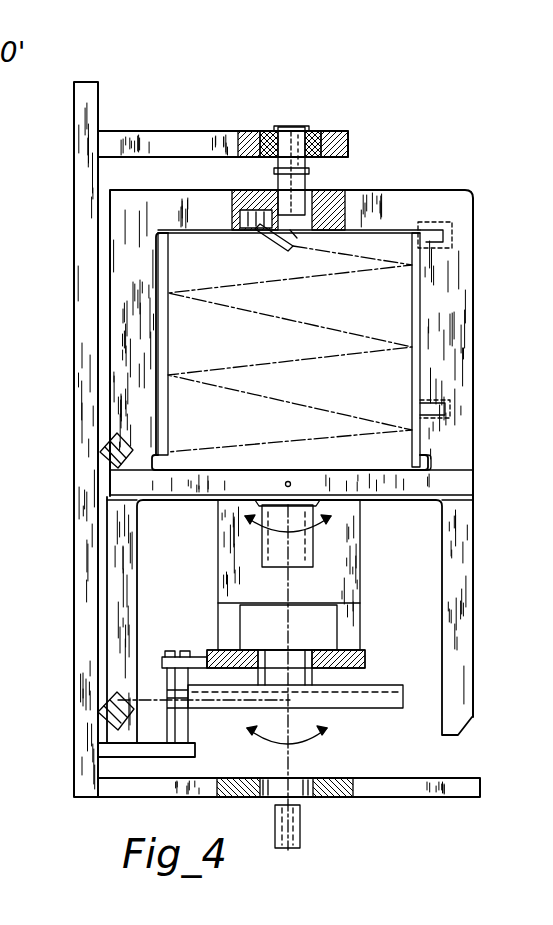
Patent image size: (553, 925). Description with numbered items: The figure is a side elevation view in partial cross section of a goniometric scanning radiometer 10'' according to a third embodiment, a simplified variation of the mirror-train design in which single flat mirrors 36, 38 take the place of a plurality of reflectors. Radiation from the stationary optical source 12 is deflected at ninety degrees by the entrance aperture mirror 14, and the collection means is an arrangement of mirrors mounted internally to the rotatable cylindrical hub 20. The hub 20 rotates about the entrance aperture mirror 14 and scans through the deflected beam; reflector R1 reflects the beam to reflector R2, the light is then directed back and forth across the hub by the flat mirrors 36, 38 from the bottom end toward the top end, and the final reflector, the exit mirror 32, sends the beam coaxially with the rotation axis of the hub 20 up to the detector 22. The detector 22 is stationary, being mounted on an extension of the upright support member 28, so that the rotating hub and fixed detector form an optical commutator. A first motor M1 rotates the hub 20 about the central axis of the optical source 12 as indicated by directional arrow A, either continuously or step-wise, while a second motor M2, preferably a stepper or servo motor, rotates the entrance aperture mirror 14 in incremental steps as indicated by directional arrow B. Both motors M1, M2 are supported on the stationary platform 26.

The scanning radiometer 10'' is at (501, 102).
The radiating optical source 12 is at (314, 830).
The entrance aperture mirror 14 is at (380, 685).
The rotatable cylindrical hub 20 is at (473, 322).
The detector 22 is at (308, 179).
The stationary platform 26 is at (444, 778).
The upright support member 28 is at (80, 324).
The exit mirror 32 is at (285, 240).
The flat mirror 36 is at (168, 352).
The flat mirror 38 is at (412, 320).
The reflector R1 is at (100, 700).
The reflector R2 is at (100, 460).
The first motor M1 is at (273, 545).
The second motor M2 is at (289, 626).
The directional arrow A is at (330, 522).
The directional arrow B is at (324, 728).